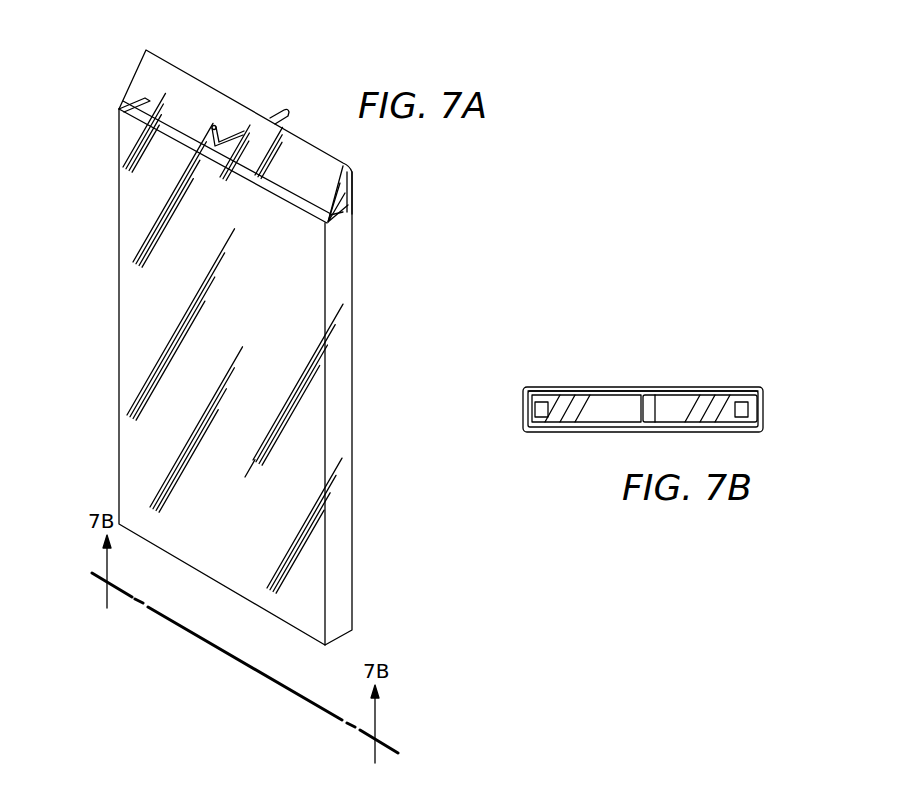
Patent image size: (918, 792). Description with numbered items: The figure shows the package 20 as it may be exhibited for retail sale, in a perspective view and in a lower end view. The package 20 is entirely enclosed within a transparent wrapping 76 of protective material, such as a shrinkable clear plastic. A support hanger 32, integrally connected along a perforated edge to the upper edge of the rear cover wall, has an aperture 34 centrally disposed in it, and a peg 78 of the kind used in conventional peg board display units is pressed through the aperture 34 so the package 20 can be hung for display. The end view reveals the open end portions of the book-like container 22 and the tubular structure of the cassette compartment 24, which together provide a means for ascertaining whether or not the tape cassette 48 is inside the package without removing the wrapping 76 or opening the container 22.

In FIG. 7A, the package 20 is at (141, 177).
In FIG. 7B, the package 20 is at (570, 430).
In FIG. 7B, the book-like container 22 is at (523, 405).
In FIG. 7B, the cassette compartment 24 is at (770, 403).
In FIG. 7A, the support hanger 32 is at (353, 185).
In FIG. 7A, the aperture 34 is at (240, 129).
In FIG. 7B, the tape cassette 48 is at (582, 386).
In FIG. 7A, the transparent wrapping 76 is at (343, 215).
In FIG. 7B, the transparent wrapping 76 is at (657, 400).
In FIG. 7A, the peg 78 is at (276, 108).